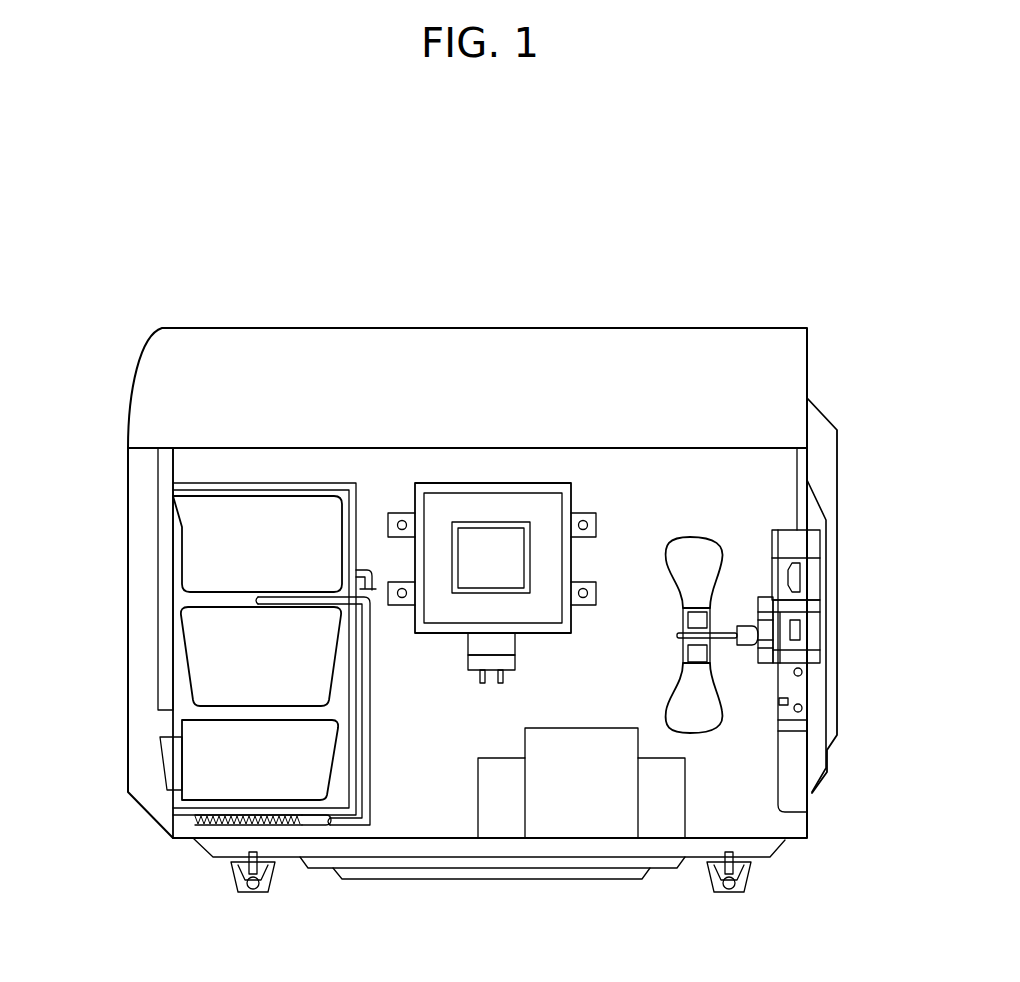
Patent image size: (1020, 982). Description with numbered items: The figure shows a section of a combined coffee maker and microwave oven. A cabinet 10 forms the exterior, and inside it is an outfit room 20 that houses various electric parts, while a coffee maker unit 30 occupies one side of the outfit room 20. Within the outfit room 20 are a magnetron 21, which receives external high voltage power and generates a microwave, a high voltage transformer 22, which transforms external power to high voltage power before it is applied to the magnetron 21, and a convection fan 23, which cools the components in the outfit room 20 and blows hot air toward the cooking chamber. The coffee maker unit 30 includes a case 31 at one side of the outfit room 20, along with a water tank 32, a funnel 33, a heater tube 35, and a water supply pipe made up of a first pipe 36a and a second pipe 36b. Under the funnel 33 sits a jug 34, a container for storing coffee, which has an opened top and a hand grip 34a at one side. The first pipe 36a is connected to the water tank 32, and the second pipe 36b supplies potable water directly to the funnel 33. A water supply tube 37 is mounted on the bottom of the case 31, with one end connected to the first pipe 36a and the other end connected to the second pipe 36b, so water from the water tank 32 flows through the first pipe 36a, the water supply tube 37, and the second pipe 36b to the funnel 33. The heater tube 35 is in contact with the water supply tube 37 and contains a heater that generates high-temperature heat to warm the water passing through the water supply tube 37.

The cabinet 10 is at (807, 360).
The outfit room 20 is at (652, 512).
The magnetron 21 is at (497, 550).
The high voltage transformer 22 is at (577, 807).
The convection fan 23 is at (703, 727).
The coffee maker unit 30 is at (177, 563).
The case 31 is at (277, 482).
The water tank 32 is at (205, 535).
The funnel 33 is at (202, 648).
The jug 34 is at (202, 752).
The hand grip 34a is at (157, 778).
The heater tube 35 is at (200, 827).
The first pipe 36a is at (370, 565).
The second pipe 36b is at (365, 772).
The water supply tube 37 is at (317, 822).